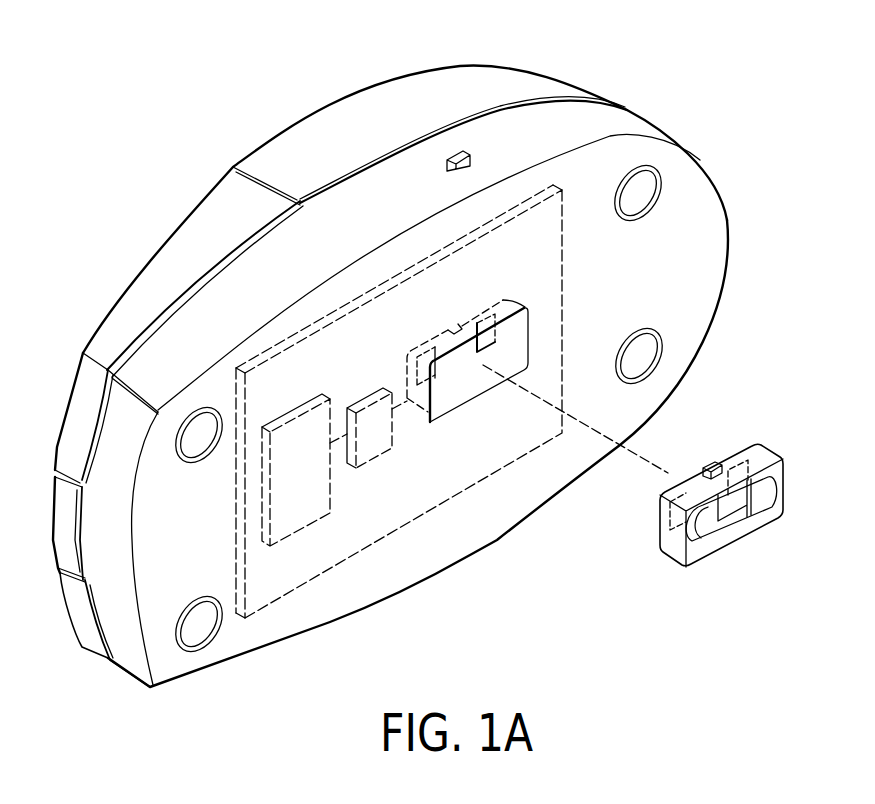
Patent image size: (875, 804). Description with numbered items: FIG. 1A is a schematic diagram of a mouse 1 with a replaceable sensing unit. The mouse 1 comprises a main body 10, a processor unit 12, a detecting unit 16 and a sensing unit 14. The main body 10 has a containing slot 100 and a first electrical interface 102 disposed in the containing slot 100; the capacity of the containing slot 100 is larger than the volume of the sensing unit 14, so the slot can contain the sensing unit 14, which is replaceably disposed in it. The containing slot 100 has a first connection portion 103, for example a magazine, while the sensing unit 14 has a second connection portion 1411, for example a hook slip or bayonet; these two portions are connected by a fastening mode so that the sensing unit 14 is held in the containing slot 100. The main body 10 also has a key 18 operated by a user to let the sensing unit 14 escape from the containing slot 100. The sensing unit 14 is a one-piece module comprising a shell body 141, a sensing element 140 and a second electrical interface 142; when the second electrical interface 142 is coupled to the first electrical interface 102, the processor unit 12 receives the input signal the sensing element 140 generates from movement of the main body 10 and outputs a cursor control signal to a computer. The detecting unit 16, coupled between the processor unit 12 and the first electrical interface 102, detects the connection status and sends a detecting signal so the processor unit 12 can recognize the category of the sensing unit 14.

The mouse 1 is at (76, 61).
The main body 10 is at (153, 288).
The processor unit 12 is at (303, 490).
The sensing unit 14 is at (783, 481).
The detecting unit 16 is at (370, 433).
The key 18 is at (452, 150).
The containing slot 100 is at (473, 387).
The first electrical interface 102 is at (495, 340).
The first connection portion 103 is at (455, 324).
The sensing element 140 is at (755, 503).
The shell body 141 is at (671, 552).
The second electrical interface 142 is at (745, 466).
The second connection portion 1411 is at (710, 462).